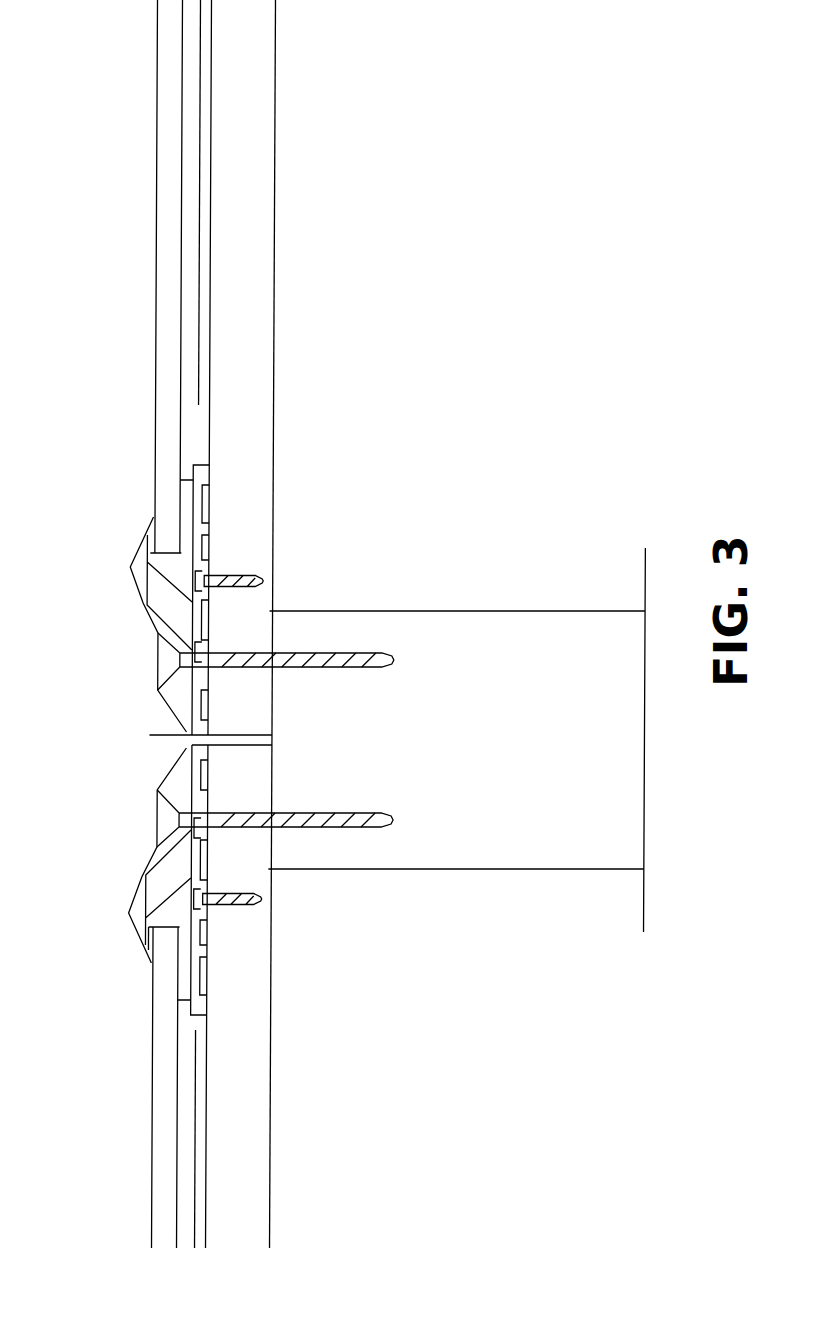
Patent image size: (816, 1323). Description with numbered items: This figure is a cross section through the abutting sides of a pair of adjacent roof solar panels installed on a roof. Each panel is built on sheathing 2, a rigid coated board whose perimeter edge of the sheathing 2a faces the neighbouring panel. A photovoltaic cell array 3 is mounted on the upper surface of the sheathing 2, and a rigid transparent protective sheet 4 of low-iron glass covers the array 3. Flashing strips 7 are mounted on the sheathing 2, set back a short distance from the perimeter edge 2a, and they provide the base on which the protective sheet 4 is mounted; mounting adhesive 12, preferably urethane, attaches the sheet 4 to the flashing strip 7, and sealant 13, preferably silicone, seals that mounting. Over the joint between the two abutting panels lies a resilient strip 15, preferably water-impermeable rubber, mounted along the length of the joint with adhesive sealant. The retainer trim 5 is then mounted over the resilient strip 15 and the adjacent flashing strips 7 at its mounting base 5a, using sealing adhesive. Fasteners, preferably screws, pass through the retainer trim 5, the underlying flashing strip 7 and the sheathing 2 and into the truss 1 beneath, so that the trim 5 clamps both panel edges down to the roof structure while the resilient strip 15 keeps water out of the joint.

The truss 1 is at (548, 645).
The sheathing 2 is at (250, 267).
The perimeter edge of the sheathing 2a is at (190, 730).
The photovoltaic cell array 3 is at (200, 357).
The rigid transparent protective sheet 4 is at (157, 143).
The retainer trim 5 is at (152, 600).
The mounting base 5a is at (185, 858).
The flashing strip 7 is at (204, 528).
The mounting adhesive 12 is at (196, 1014).
The sealant 13 is at (152, 935).
The resilient strip 15 is at (188, 739).